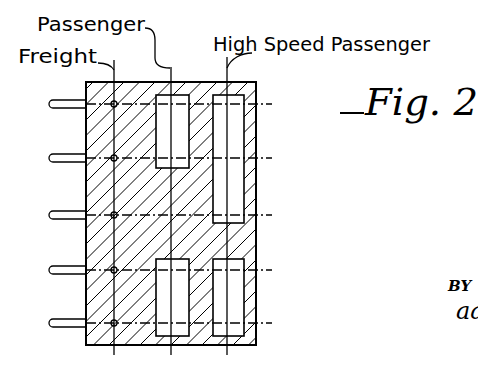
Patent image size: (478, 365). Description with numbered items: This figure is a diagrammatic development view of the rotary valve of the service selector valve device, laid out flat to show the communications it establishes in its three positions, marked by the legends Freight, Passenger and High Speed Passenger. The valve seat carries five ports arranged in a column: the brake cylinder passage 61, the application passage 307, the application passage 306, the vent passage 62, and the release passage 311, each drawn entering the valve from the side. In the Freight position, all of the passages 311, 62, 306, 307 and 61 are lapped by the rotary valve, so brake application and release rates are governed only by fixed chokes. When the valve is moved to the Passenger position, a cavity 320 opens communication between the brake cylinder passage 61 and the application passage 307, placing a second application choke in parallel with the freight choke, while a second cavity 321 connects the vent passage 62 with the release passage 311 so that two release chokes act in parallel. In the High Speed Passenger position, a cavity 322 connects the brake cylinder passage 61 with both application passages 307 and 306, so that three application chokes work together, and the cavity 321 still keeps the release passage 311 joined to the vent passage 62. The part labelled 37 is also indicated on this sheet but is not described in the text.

The plate 37 is at (292, 0).
The brake cylinder passage 61 is at (62, 104).
The vent passage 62 is at (62, 270).
The application passage 306 is at (62, 215).
The application passage 307 is at (62, 158).
The release passage 311 is at (62, 323).
The cavity 320 is at (178, 108).
The second cavity 321 is at (183, 283).
The cavity 322 is at (236, 138).